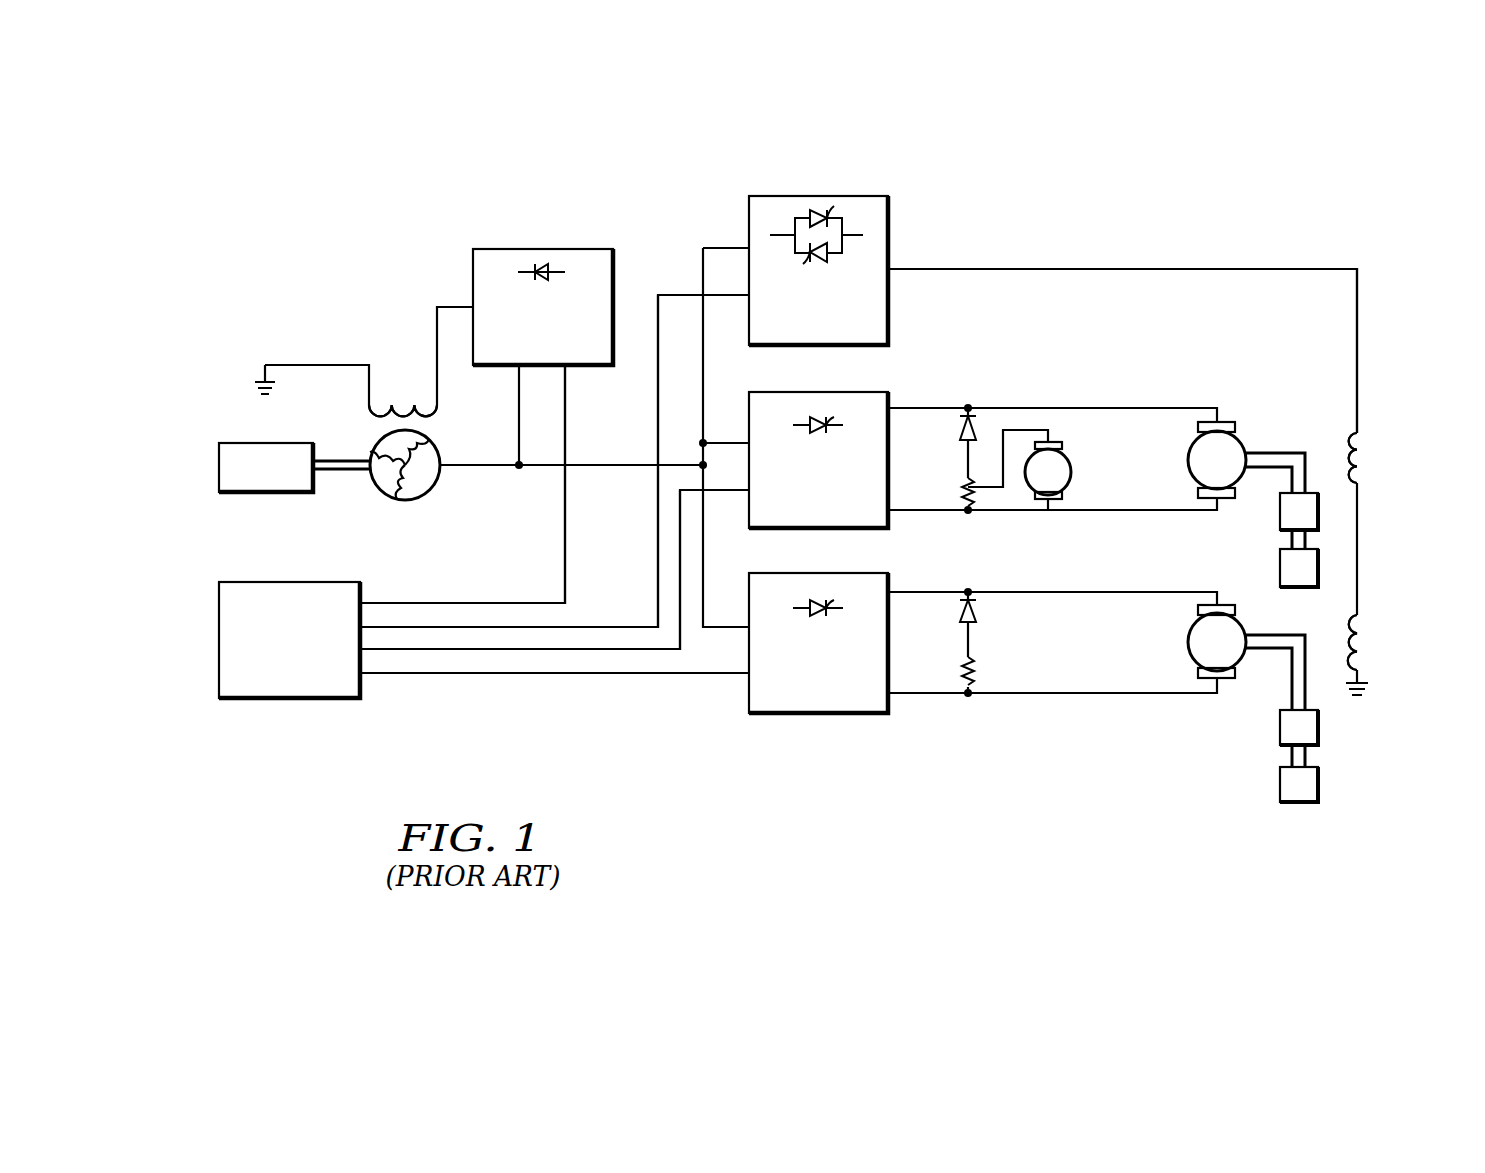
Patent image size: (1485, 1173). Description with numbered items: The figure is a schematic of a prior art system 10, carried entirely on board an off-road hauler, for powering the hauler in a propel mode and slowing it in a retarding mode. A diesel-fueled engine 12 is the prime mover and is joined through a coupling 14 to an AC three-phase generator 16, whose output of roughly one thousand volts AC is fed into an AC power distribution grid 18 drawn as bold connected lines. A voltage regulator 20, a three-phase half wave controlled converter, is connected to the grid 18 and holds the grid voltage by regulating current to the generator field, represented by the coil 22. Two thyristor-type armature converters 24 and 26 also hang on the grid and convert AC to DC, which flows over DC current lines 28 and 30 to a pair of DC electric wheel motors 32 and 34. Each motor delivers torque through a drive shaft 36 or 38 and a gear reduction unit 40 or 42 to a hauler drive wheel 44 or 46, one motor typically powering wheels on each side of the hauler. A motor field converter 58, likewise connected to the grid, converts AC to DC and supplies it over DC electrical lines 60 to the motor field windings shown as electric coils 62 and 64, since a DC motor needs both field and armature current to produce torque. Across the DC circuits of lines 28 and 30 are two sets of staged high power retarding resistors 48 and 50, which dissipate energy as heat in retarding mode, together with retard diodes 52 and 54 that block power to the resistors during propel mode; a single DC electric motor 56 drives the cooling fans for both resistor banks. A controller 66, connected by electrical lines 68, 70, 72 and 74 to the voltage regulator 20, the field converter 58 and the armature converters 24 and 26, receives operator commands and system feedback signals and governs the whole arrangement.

The prior art system 10 is at (896, 785).
The engine 12 is at (219, 466).
The coupling 14 is at (352, 460).
The generator 16 is at (440, 455).
The AC power distribution grid 18 is at (519, 408).
The voltage regulator 20 is at (473, 280).
The coil 22 is at (399, 403).
The armature converter 24 is at (890, 405).
The armature converter 26 is at (890, 707).
The DC current lines 28 is at (1020, 408).
The DC current lines 30 is at (1106, 590).
The DC electric wheel motor 32 is at (1188, 461).
The DC electric wheel motor 34 is at (1188, 643).
The drive shaft 36 is at (1270, 453).
The drive shaft 38 is at (1278, 648).
The gear reduction unit 40 is at (1280, 510).
The gear reduction unit 42 is at (1318, 725).
The hauler drive wheel 44 is at (1280, 568).
The hauler drive wheel 46 is at (1318, 785).
The retarding resistors 48 is at (958, 485).
The retarding resistors 50 is at (958, 667).
The retard diode 52 is at (958, 435).
The retard diode 54 is at (958, 617).
The DC electric motor 56 is at (1071, 471).
The motor field converter 58 is at (890, 237).
The DC electrical lines 60 is at (1108, 269).
The electric coil 62 is at (1362, 455).
The electric coil 64 is at (1359, 644).
The controller 66 is at (219, 640).
The electrical line 68 is at (530, 603).
The electrical line 70 is at (624, 627).
The electrical line 72 is at (682, 639).
The electrical line 74 is at (527, 673).